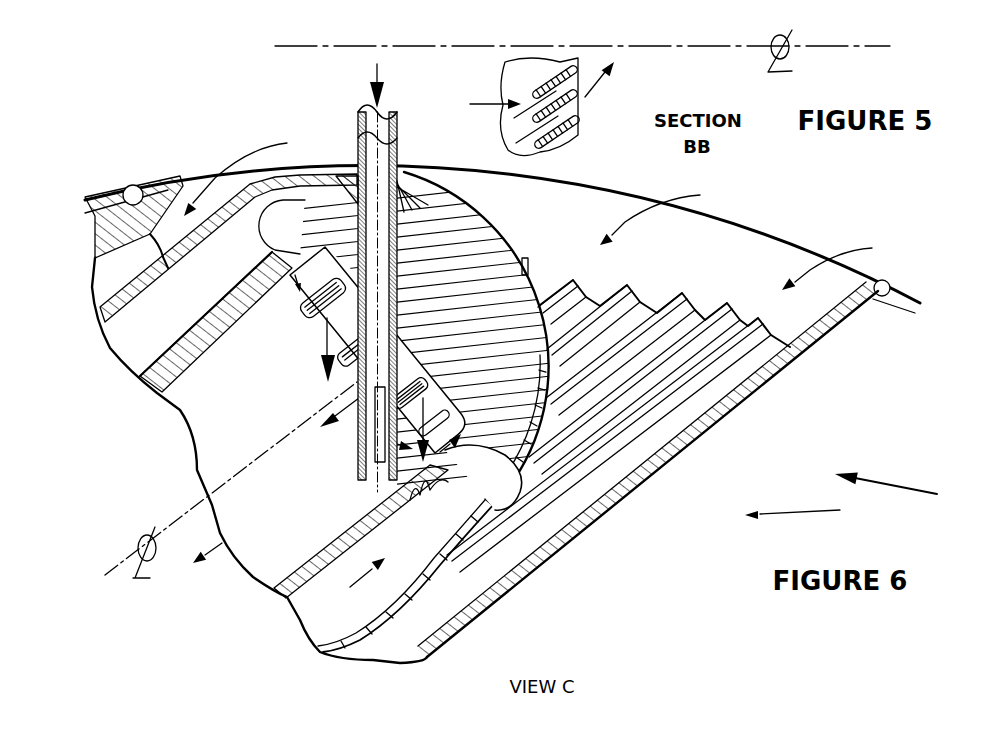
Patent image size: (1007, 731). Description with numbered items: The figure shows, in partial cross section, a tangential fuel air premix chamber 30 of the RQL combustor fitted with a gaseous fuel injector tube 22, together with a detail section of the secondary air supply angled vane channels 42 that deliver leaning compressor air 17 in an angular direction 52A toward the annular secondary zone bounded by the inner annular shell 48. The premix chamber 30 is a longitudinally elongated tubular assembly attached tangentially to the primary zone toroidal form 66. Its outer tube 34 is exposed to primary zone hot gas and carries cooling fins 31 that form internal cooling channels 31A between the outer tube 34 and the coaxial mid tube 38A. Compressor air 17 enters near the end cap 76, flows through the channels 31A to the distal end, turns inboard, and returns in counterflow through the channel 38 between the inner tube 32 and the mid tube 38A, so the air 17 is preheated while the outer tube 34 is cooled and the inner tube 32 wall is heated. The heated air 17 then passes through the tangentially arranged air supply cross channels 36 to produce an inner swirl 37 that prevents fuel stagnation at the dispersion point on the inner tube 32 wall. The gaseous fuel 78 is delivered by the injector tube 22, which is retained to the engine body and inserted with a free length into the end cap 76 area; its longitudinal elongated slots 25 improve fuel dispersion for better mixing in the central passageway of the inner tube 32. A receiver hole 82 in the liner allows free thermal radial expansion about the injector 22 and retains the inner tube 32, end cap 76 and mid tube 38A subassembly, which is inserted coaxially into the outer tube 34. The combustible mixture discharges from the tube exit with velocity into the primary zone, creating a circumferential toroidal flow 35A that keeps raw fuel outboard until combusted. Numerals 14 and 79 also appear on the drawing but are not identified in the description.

In FIG. 5, the pipe 14 is at (359, 0).
In FIG. 5, the air 17 is at (473, 104).
In FIG. 6, the air 17 is at (247, 693).
In FIG. 6, the gaseous fuel injector tube 22 is at (399, 152).
In FIG. 6, the longitudinal elongated slots 25 is at (357, 447).
In FIG. 6, the fuel air premix chamber 30 is at (552, 568).
In FIG. 6, the cooling fins 31 is at (173, 182).
In FIG. 6, the internal cooling channels 31A is at (497, 614).
In FIG. 6, the inner tube 32 is at (380, 508).
In FIG. 6, the outer tube 34 is at (612, 486).
In FIG. 6, the circumferential toroidal flow 35A is at (841, 497).
In FIG. 6, the air supply cross channels 36 is at (243, 327).
In FIG. 6, the inner swirl flow 37 is at (328, 320).
In FIG. 6, the channel 38 is at (153, 322).
In FIG. 6, the mid tube 38A is at (377, 657).
In FIG. 5, the channels/vanes 42 is at (590, 113).
In FIG. 5, the inner annular shell 48 is at (543, 20).
In FIG. 5, the angular air direction 52A is at (600, 80).
In FIG. 5, the primary zone toroidal form 66 is at (518, 71).
In FIG. 6, the primary zone toroidal form 66 is at (100, 203).
In FIG. 6, the end cap 76 is at (405, 333).
In FIG. 6, the fuel 78 is at (385, 78).
In FIG. 5, the upper member 79 is at (343, 22).
In FIG. 6, the receiver hole 82 is at (396, 255).